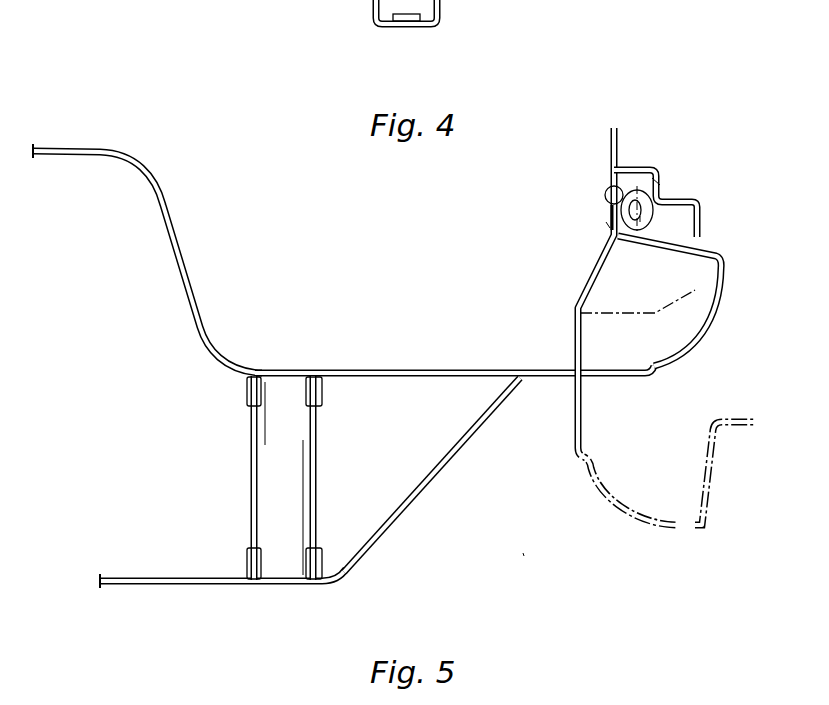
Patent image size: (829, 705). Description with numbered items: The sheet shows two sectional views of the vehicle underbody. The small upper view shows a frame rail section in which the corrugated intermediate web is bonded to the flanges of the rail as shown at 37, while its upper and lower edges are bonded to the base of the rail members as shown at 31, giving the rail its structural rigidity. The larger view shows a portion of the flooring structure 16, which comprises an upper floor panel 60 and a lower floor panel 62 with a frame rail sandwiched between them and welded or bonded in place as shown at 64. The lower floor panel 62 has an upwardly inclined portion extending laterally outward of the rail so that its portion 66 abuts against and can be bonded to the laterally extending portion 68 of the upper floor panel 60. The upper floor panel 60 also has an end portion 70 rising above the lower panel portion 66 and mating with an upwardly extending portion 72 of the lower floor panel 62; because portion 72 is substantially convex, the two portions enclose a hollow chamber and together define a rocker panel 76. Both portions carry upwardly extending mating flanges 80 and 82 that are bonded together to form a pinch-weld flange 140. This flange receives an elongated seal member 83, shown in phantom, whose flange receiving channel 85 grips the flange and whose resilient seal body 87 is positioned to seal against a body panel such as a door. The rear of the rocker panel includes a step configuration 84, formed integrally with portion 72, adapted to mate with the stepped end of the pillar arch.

In FIG. 5, the flooring structure 16 is at (525, 556).
In FIG. 4, the bond 31 is at (408, 27).
In FIG. 4, the bond 37 is at (440, 5).
In FIG. 5, the upper floor panel 60 is at (225, 352).
In FIG. 5, the lower floor panel 62 is at (188, 577).
In FIG. 5, the weld 64 is at (333, 370).
In FIG. 5, the portion of the lower panel 66 is at (547, 380).
In FIG. 5, the laterally extending portion of the upper panel 68 is at (547, 368).
In FIG. 5, the end portion of the upper panel 70 is at (607, 257).
In FIG. 5, the upwardly extending portion of the lower panel 72 is at (703, 330).
In FIG. 5, the rocker panel 76 is at (696, 349).
In FIG. 5, the mating flange 80 is at (605, 193).
In FIG. 5, the mating flange 82 is at (626, 192).
In FIG. 5, the elongated seal member 83 is at (652, 181).
In FIG. 5, the step configuration 84 is at (674, 190).
In FIG. 5, the flange receiving channel 85 is at (607, 226).
In FIG. 5, the resilient seal body 87 is at (640, 218).
In FIG. 5, the pinch-weld flange 140 is at (609, 217).